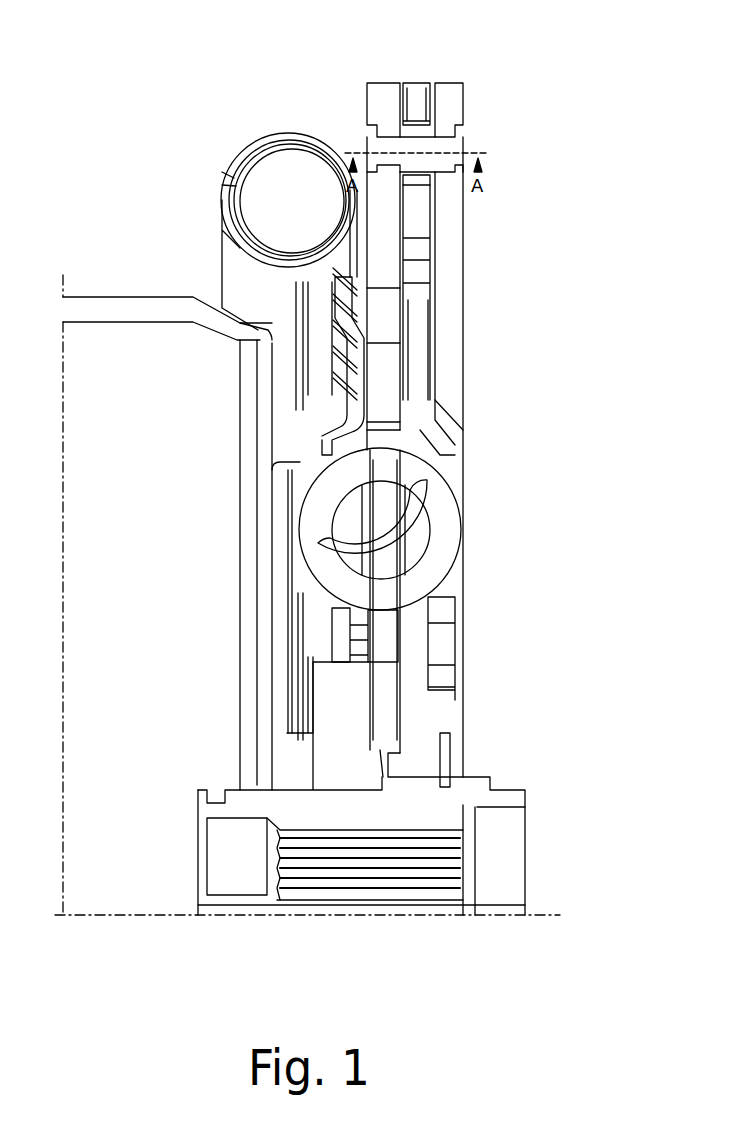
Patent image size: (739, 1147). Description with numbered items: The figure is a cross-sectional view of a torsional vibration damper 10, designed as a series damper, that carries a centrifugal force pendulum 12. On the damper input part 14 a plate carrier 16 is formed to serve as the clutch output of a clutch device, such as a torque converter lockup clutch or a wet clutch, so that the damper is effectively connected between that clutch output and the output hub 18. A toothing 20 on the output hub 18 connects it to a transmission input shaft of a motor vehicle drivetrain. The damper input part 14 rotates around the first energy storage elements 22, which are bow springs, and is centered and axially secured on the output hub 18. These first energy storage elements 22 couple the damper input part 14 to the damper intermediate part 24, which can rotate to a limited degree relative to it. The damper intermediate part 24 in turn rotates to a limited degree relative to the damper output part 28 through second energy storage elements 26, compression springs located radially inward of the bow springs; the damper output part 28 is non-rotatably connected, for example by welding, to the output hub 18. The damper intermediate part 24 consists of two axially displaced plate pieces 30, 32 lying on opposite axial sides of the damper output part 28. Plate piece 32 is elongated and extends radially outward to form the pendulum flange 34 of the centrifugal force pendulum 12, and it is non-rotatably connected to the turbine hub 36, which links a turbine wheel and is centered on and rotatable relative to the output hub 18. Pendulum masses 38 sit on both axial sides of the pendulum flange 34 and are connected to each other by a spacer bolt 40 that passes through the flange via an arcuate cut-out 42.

The torsional vibration damper 10 is at (299, 118).
The centrifugal force pendulum 12 is at (465, 88).
The damper input part 14 is at (228, 182).
The plate carrier 16 is at (108, 300).
The output hub 18 is at (375, 705).
The toothing 20 is at (437, 863).
The first energy storage elements 22 is at (290, 180).
The damper intermediate part 24 is at (437, 377).
The second energy storage elements 26 is at (440, 548).
The damper output part 28 is at (375, 652).
The plate piece 30 is at (345, 308).
The plate piece 32 is at (447, 412).
The pendulum flange 34 is at (413, 345).
The turbine hub 36 is at (425, 763).
The pendulum masses 38 is at (458, 218).
The spacer bolt 40 is at (463, 137).
The arcuate cut-out 42 is at (418, 118).